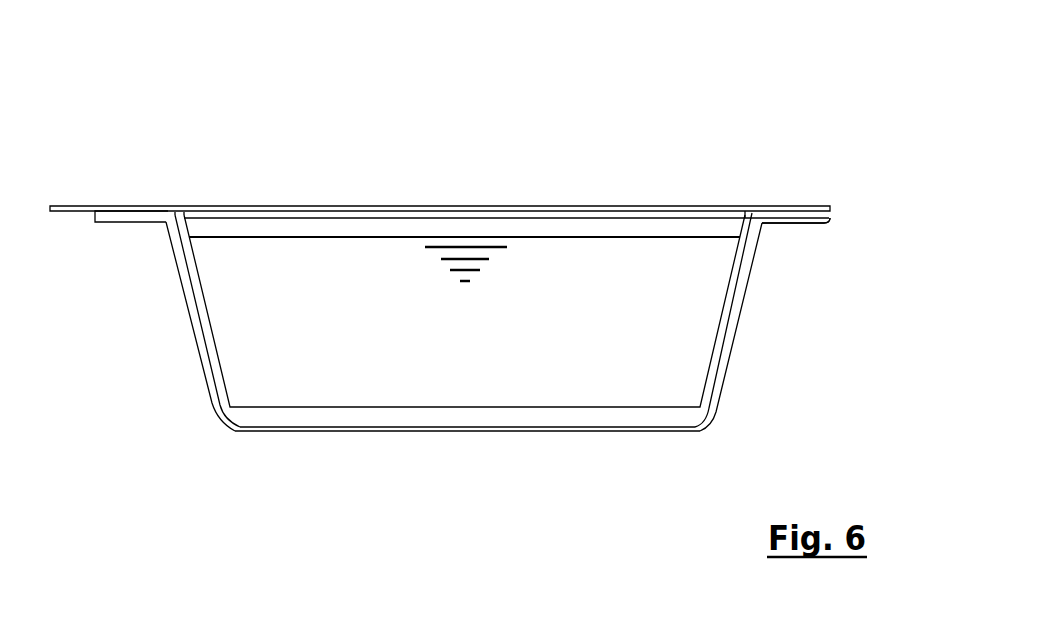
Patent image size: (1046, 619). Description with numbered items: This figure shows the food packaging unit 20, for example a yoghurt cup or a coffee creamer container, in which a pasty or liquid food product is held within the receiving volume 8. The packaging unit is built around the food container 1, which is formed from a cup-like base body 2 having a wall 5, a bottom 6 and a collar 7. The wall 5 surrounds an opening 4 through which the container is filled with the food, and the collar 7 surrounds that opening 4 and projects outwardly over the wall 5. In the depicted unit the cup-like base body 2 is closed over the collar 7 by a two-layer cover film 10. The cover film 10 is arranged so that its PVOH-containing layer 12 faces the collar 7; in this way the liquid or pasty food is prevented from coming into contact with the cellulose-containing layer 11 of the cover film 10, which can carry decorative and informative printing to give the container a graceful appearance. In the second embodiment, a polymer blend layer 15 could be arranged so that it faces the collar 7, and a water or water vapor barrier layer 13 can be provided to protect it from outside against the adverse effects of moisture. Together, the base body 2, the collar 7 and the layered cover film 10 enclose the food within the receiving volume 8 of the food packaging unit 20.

The food container 1 is at (148, 348).
The cup-like base body 2 is at (735, 327).
The opening 4 is at (478, 180).
The wall 5 is at (458, 363).
The bottom 6 is at (505, 432).
The collar 7 is at (812, 222).
The receiving volume 8 is at (318, 347).
The two-layer cover film 10 is at (102, 143).
The cellulose-containing layer 11 is at (728, 215).
The PVOH-containing layer 12 is at (717, 207).
The water or water vapor barrier layer 13 is at (137, 210).
The polymer blend layer 15 is at (192, 217).
The food packaging unit 20 is at (327, 127).